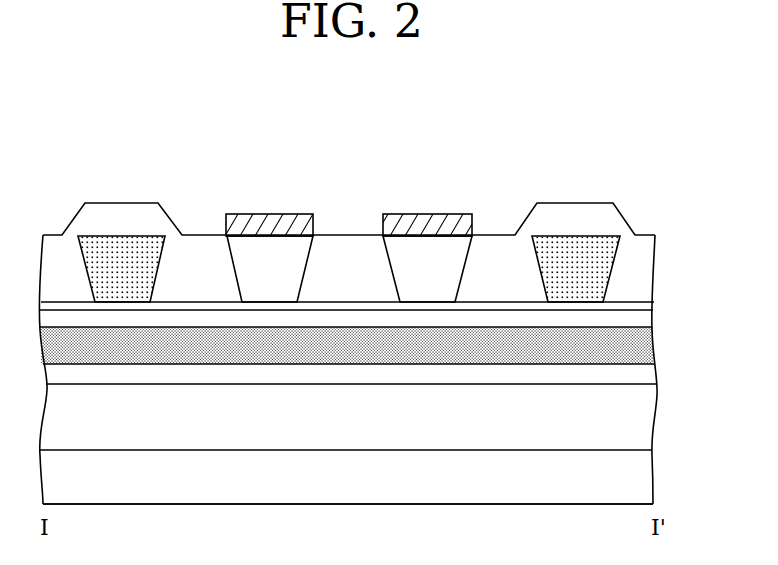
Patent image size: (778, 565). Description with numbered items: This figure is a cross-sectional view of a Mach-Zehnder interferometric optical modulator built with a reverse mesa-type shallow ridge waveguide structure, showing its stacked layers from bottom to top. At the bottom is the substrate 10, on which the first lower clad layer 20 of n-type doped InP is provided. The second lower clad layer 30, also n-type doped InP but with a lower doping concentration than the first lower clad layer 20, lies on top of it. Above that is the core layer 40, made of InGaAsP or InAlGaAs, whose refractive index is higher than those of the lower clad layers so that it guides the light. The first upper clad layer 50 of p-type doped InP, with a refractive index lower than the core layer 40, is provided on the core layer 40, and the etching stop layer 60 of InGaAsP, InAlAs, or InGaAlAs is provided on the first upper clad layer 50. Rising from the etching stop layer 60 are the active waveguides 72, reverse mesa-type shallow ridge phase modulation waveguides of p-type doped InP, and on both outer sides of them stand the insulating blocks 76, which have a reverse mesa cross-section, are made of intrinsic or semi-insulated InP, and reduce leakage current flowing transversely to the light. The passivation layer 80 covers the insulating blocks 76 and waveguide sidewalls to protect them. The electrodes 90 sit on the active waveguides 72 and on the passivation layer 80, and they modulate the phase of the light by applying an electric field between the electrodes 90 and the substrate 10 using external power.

The substrate 10 is at (642, 475).
The first lower clad layer 20 is at (650, 415).
The second lower clad layer 30 is at (645, 375).
The core layer 40 is at (645, 350).
The first upper clad layer 50 is at (645, 322).
The etching stop layer 60 is at (645, 305).
The active waveguides 72 is at (412, 210).
The insulating blocks 76 is at (600, 257).
The passivation layer 80 is at (647, 282).
The electrodes 90 is at (448, 210).